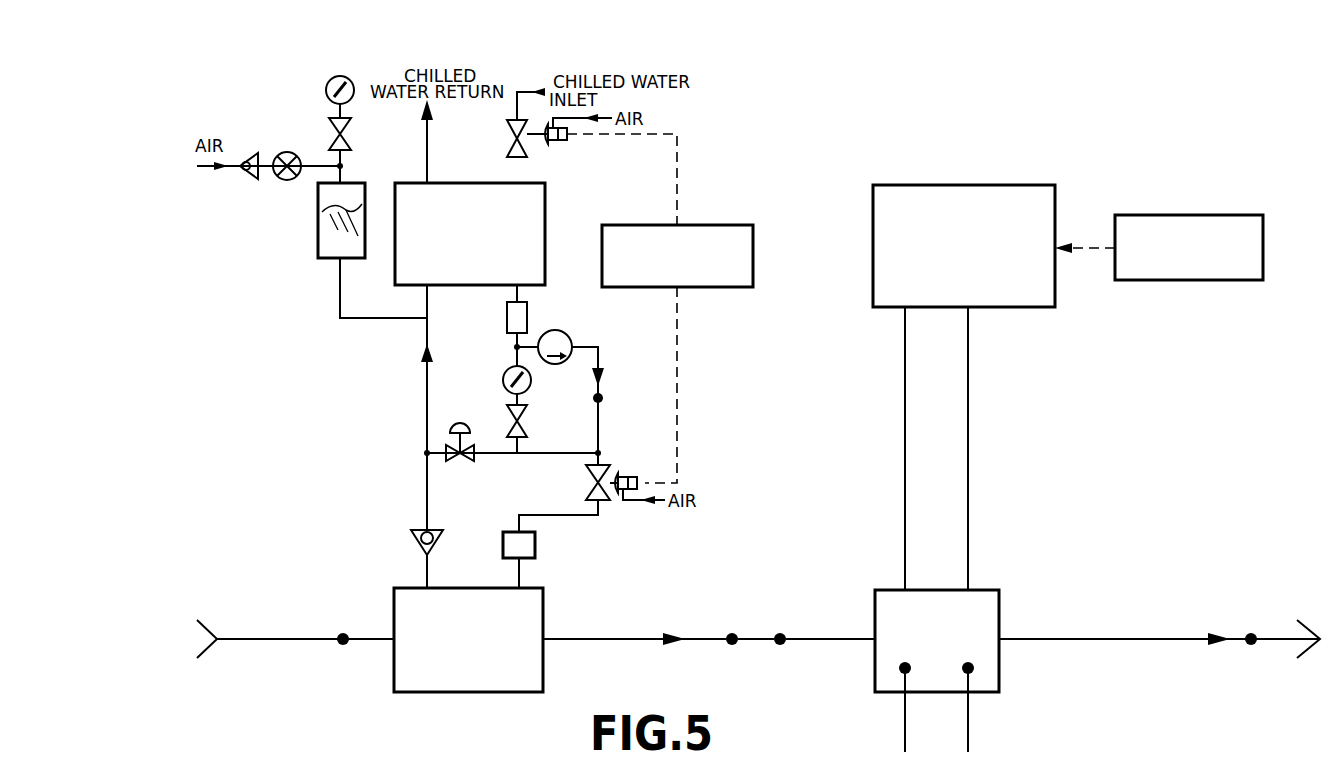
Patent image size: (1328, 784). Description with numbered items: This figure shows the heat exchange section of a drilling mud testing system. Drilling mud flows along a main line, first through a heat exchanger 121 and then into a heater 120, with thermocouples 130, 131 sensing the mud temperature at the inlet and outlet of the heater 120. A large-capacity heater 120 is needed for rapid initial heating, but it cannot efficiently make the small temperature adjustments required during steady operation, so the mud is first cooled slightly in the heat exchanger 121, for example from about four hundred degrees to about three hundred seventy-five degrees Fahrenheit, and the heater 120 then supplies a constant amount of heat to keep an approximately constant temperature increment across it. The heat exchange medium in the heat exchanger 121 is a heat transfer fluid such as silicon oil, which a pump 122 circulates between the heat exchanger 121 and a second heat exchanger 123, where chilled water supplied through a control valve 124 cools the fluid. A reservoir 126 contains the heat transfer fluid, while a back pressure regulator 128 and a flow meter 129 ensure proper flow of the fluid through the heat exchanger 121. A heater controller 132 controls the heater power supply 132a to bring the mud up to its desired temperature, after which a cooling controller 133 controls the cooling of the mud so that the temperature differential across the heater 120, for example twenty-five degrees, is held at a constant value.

The heater 120 is at (975, 590).
The heat exchanger 121 is at (543, 605).
The pump 122 is at (560, 330).
The heat exchanger 123 is at (545, 236).
The control valve 124 is at (510, 137).
The reservoir 126 is at (318, 233).
The back pressure regulator 128 is at (446, 458).
The flow meter 129 is at (535, 545).
The thermocouple 130 is at (780, 639).
The thermocouple 131 is at (1251, 639).
The heater controller 132 is at (1178, 280).
The heater power supply 132a is at (1013, 307).
The cooling controller 133 is at (753, 250).